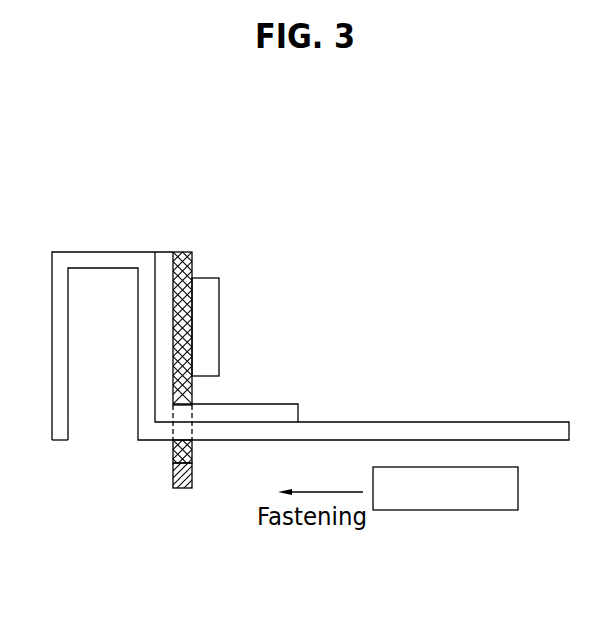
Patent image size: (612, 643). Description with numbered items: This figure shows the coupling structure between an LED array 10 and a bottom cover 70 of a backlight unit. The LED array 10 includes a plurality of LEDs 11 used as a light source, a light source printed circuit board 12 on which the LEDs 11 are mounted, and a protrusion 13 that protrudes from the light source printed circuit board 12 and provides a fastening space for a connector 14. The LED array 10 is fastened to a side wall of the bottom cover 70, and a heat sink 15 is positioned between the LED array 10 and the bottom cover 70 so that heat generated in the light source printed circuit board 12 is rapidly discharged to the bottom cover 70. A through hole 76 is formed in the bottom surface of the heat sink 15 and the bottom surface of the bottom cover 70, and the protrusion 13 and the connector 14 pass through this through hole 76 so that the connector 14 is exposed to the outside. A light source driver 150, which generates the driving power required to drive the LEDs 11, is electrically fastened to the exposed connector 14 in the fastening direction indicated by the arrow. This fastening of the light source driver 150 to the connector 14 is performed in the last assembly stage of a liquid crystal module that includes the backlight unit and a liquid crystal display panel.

The LED array 10 is at (170, 161).
The LEDs 11 is at (207, 288).
The light source printed circuit board 12 is at (185, 253).
The protrusion 13 is at (193, 443).
The connector 14 is at (193, 473).
The heat sink 15 is at (283, 410).
The bottom cover 70 is at (62, 258).
The through hole 76 is at (175, 428).
The light source driver 150 is at (445, 498).